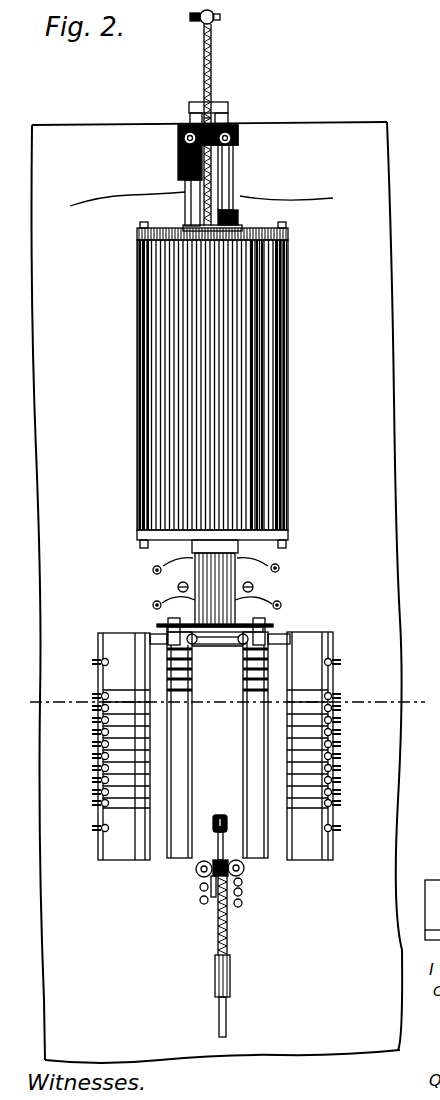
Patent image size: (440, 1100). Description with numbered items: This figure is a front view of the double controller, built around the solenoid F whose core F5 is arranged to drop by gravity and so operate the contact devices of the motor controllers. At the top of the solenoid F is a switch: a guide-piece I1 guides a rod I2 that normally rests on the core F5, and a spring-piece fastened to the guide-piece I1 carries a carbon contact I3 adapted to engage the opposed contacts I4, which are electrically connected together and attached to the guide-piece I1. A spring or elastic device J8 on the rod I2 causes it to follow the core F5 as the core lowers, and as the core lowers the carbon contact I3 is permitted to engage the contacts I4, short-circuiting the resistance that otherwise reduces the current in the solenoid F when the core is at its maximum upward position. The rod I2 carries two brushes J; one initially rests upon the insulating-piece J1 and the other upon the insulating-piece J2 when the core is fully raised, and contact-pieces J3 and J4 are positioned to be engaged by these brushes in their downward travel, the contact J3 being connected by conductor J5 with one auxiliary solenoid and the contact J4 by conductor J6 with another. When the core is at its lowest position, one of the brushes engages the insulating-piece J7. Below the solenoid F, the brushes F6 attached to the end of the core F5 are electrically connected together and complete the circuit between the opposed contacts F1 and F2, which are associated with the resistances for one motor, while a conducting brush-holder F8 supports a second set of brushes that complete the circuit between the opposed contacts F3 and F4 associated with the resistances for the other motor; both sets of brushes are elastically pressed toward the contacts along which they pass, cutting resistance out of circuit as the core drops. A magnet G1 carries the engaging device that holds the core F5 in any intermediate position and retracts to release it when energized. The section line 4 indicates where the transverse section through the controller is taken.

The guide-piece I1 is at (229, 123).
The rod I2 is at (212, 42).
The carbon contact I3 is at (221, 104).
The opposed contacts I4 is at (198, 118).
The brushes J is at (183, 140).
The insulating-piece J1 is at (239, 136).
The insulating-piece J2 is at (178, 160).
The contact-piece J3 is at (233, 172).
The contact-piece J4 is at (188, 212).
The conductor J5 is at (323, 198).
The conductor J6 is at (88, 203).
The insulating-piece J7 is at (238, 213).
The spring J8 is at (212, 61).
The solenoid F is at (262, 388).
The contact F1 is at (323, 790).
The contact F2 is at (117, 767).
The contact F3 is at (267, 673).
The contact F4 is at (178, 660).
The core F5 is at (236, 576).
The brushes F6 is at (153, 636).
The brush-holder F8 is at (216, 650).
The magnet G1 is at (196, 580).
The section line 4 is at (74, 710).